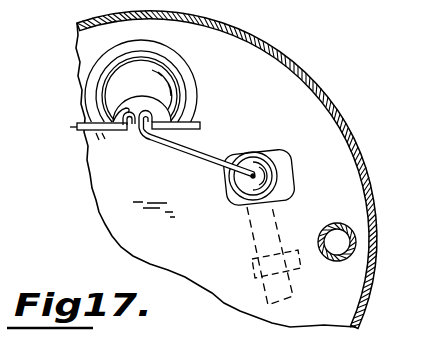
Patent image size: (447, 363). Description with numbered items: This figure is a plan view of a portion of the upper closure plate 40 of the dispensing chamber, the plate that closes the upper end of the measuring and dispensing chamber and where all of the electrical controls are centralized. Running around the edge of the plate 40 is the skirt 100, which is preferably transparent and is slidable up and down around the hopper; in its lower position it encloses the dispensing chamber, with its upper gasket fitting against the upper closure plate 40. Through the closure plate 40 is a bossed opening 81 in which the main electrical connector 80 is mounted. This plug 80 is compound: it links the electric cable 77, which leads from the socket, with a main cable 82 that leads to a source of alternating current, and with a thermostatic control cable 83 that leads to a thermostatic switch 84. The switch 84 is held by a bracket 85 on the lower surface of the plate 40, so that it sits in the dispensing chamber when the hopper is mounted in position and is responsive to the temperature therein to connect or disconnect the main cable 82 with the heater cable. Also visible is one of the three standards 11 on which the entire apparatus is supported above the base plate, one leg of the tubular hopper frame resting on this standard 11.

The skirt 100 is at (297, 73).
The bossed opening 81 is at (184, 86).
The main cable 82 is at (200, 126).
The main electrical connector 80 is at (118, 102).
The electric cable 77 is at (92, 135).
The thermostatic control cable 83 is at (213, 148).
The thermostatic switch 84 is at (249, 239).
The bracket 85 is at (252, 272).
The closure plate 40 is at (162, 196).
The standard 11 is at (337, 235).